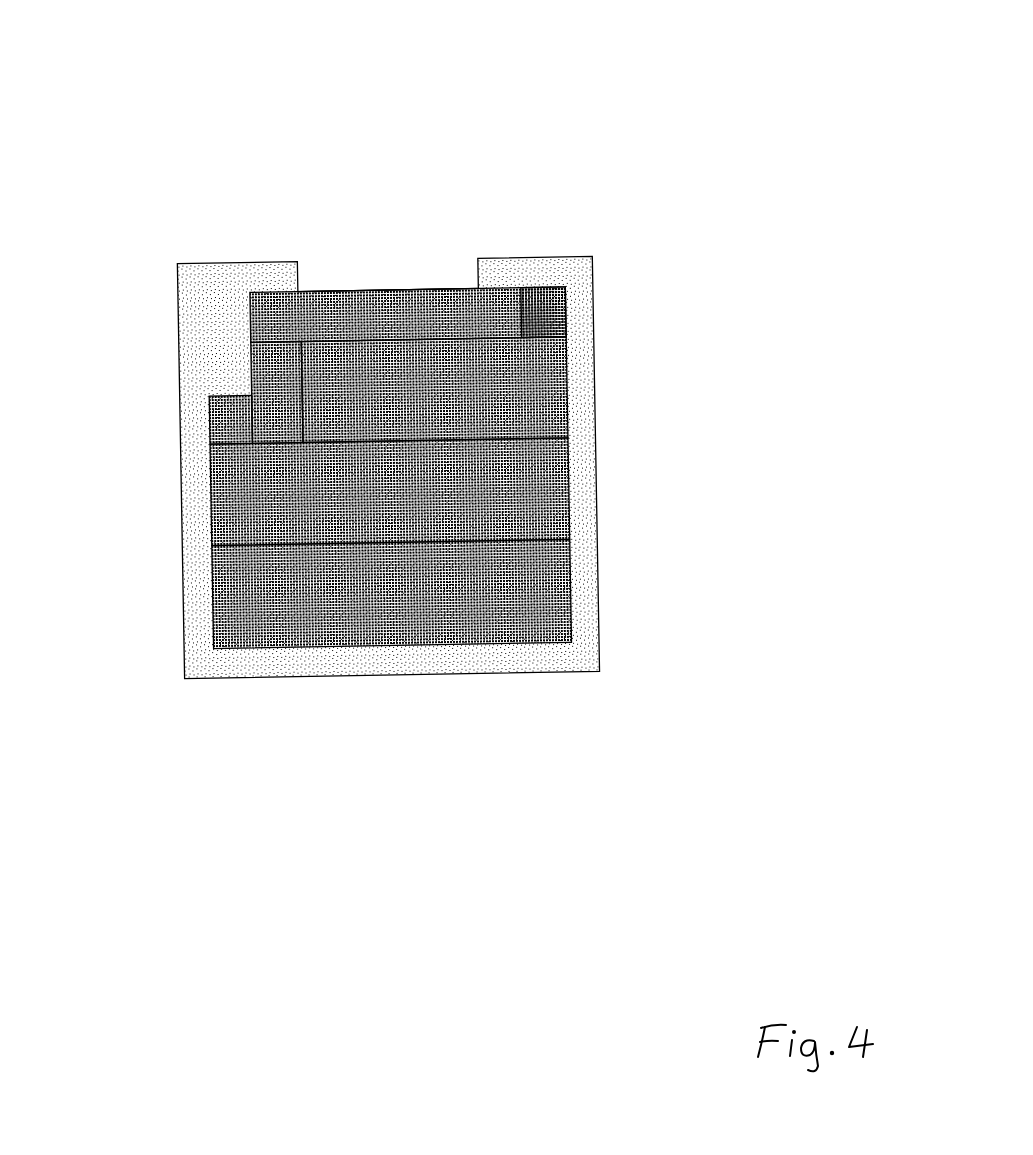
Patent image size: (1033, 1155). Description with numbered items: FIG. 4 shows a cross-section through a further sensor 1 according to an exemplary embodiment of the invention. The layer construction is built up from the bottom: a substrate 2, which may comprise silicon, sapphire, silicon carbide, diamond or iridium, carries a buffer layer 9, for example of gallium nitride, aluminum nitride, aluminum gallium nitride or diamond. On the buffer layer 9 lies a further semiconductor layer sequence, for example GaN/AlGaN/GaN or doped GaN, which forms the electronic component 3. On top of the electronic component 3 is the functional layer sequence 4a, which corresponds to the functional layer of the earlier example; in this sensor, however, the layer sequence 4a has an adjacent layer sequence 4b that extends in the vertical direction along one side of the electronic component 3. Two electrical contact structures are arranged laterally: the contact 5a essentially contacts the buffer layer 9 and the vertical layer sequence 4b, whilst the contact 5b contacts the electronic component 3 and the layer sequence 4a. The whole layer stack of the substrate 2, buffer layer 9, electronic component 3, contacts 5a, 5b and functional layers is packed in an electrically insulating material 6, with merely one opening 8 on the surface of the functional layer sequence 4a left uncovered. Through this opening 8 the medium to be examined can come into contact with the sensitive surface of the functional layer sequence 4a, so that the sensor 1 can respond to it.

The semiconductor component 1 is at (420, 100).
The substrate 2 is at (522, 578).
The electronic component 3 is at (522, 397).
The layer sequence 4a is at (443, 287).
The adjacent layer sequence 4b is at (272, 360).
The contact 5a is at (237, 421).
The contact 5b is at (530, 306).
The electrically insulating material 6 is at (588, 639).
The opening 8 is at (358, 270).
The buffer layer 9 is at (522, 486).